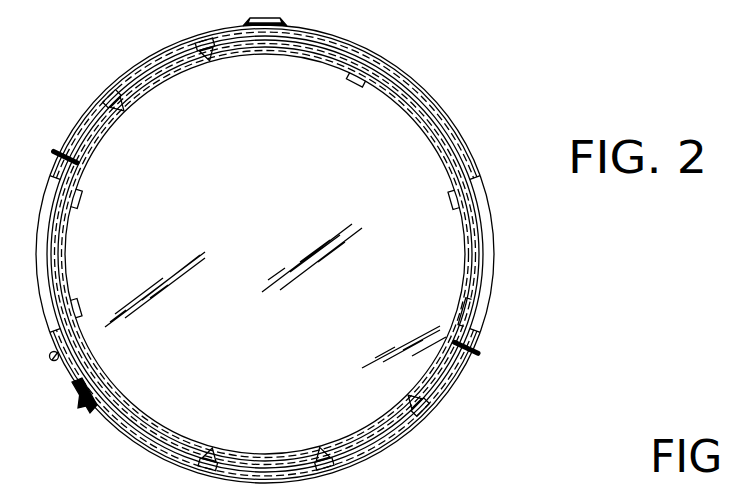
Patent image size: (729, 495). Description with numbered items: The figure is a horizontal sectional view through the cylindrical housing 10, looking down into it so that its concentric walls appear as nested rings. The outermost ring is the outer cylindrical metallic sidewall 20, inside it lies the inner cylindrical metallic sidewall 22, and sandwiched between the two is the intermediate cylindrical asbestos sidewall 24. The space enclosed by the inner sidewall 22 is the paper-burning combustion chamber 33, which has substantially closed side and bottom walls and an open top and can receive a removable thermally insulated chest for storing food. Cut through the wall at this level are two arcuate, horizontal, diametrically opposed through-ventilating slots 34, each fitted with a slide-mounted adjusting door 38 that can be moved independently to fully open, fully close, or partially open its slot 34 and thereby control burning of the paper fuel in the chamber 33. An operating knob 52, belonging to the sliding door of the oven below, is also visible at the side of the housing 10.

The housing 10 is at (492, 143).
The outer cylindrical metallic sidewall 20 is at (442, 112).
The inner cylindrical metallic sidewall 22 is at (428, 132).
The intermediate cylindrical asbestos sidewall 24 is at (424, 100).
The paper-burning combustion chamber 33 is at (332, 308).
The through-ventilating slot 34 is at (45, 270).
The adjusting door 38 is at (62, 236).
The operating knob 52 is at (52, 362).